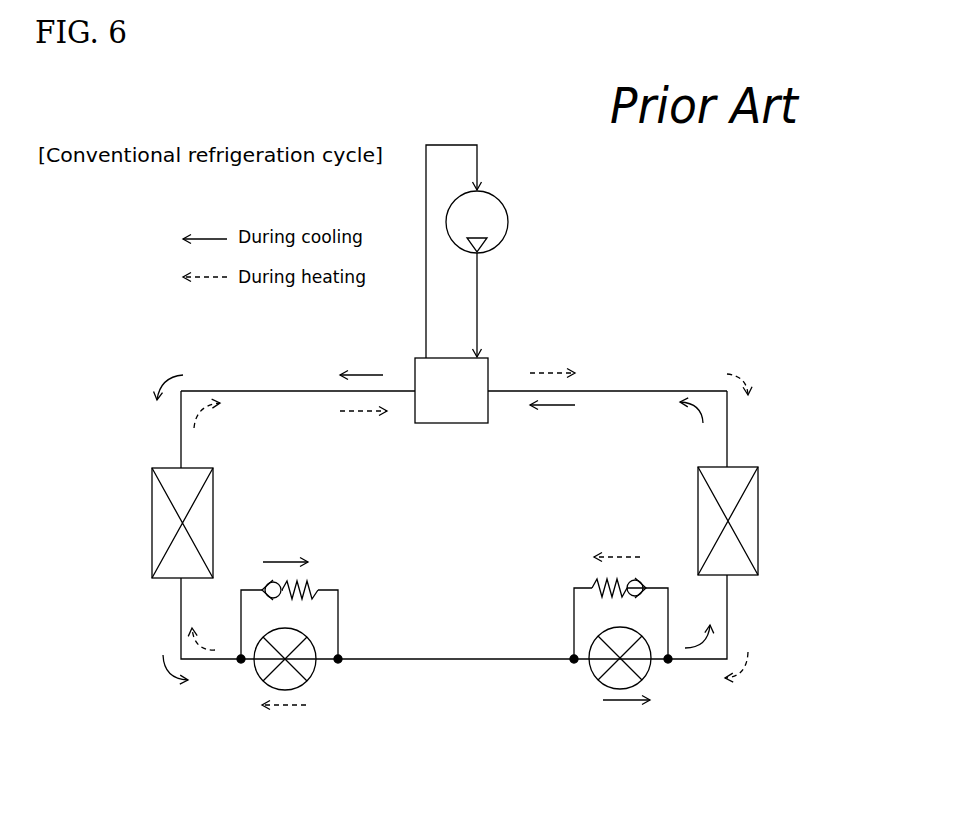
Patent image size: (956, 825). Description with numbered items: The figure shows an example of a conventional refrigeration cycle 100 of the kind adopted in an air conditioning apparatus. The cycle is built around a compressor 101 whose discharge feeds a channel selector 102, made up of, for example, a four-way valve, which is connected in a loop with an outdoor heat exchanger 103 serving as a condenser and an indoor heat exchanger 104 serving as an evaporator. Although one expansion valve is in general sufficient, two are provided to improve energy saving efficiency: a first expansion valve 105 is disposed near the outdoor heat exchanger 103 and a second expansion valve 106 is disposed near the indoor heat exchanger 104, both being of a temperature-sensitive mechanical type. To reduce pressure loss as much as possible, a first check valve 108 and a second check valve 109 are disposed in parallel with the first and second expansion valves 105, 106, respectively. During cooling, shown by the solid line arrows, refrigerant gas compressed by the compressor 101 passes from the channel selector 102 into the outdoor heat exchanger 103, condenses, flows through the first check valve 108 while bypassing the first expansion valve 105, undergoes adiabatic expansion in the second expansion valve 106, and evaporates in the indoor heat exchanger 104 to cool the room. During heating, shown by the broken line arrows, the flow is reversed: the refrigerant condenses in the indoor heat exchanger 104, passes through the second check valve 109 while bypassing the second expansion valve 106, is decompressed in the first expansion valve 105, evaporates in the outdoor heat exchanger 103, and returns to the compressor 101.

The refrigeration cycle 100 is at (718, 312).
The compressor 101 is at (508, 217).
The channel selector 102 is at (488, 374).
The outdoor heat exchanger 103 is at (152, 492).
The indoor heat exchanger 104 is at (758, 482).
The first expansion valve 105 is at (310, 676).
The second expansion valve 106 is at (595, 672).
The first check valve 108 is at (314, 584).
The second check valve 109 is at (597, 585).